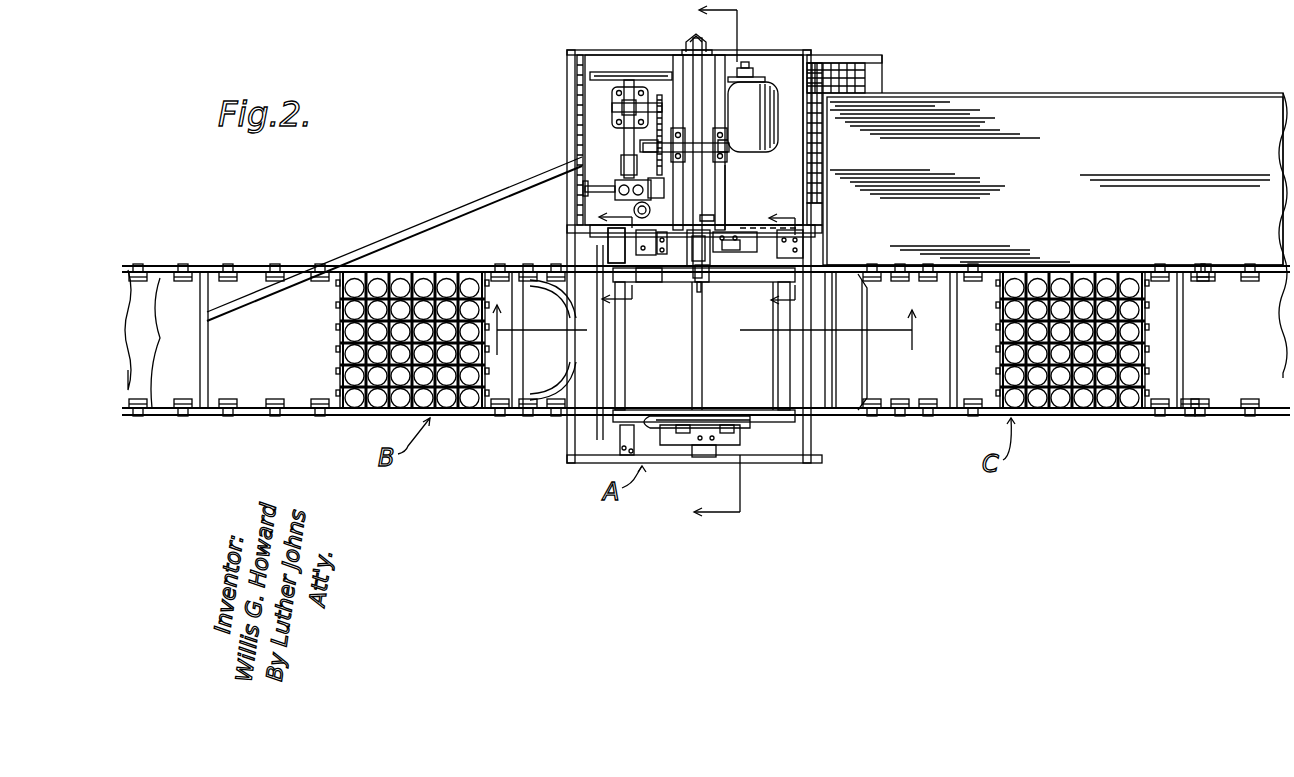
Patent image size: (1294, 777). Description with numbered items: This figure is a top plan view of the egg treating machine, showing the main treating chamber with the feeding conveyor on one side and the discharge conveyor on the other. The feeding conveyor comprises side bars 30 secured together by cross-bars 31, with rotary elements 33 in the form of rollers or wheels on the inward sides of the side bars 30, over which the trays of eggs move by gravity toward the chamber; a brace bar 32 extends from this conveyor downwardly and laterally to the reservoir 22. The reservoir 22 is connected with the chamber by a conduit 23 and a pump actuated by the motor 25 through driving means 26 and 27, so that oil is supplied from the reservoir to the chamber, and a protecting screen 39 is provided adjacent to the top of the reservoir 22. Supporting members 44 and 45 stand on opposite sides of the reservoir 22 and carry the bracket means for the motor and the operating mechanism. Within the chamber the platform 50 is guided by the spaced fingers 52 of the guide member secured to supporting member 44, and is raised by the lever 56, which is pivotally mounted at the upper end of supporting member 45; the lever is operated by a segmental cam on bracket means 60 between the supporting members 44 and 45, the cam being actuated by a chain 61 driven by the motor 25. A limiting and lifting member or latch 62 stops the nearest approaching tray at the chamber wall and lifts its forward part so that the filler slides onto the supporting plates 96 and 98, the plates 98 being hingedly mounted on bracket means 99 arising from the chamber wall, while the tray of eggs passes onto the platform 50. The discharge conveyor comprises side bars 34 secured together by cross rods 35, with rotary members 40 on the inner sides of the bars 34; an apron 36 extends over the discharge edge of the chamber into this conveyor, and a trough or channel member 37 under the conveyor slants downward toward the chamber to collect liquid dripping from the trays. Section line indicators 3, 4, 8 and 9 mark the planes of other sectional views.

The section line 3- 3 is at (725, 265).
The section line 4- 4 is at (702, 342).
The section line 8- 8 is at (622, 256).
The section line 9- 9 is at (775, 254).
The reservoir 22 is at (870, 62).
The conduit 23 is at (629, 202).
The motor 25 is at (766, 140).
The driving means 26 is at (624, 152).
The driving means 27 is at (646, 77).
The side bars 30 is at (152, 343).
The cross-bars 31 is at (205, 362).
The brace bar 32 is at (462, 210).
The rotary elements 33 is at (262, 280).
The side bars 34 is at (1226, 274).
The cross rods 35 is at (952, 388).
The apron 36 is at (854, 354).
The trough or channel member 37 is at (1053, 235).
The protecting screen 39 is at (855, 78).
The rotary members 40 is at (980, 275).
The supporting member 44 is at (710, 222).
The supporting member 45 is at (696, 36).
The platform 50 is at (620, 376).
The spaced fingers 52 is at (702, 282).
The lever 56 is at (698, 120).
The bracket means 60 is at (725, 176).
The chain 61 is at (663, 164).
The limiting and lifting member or latch 62 is at (617, 245).
The supporting members or plates 96 is at (664, 294).
The supporting members or plates 98 is at (700, 418).
The bracket means 99 is at (732, 442).